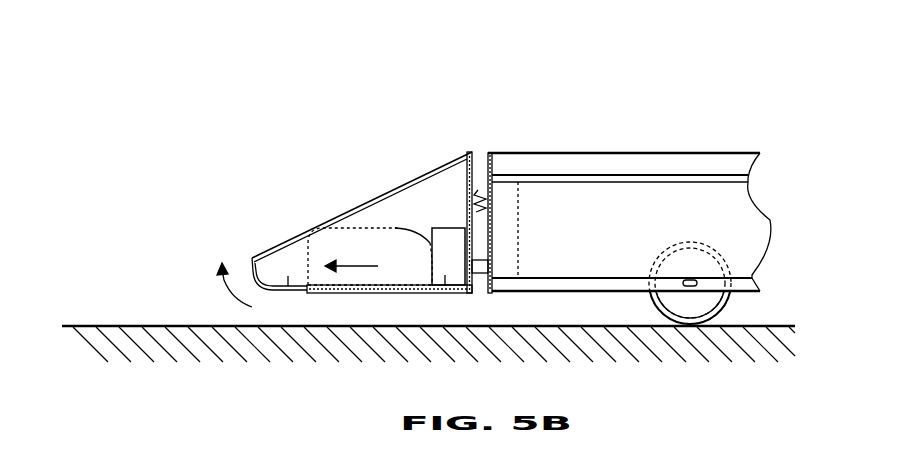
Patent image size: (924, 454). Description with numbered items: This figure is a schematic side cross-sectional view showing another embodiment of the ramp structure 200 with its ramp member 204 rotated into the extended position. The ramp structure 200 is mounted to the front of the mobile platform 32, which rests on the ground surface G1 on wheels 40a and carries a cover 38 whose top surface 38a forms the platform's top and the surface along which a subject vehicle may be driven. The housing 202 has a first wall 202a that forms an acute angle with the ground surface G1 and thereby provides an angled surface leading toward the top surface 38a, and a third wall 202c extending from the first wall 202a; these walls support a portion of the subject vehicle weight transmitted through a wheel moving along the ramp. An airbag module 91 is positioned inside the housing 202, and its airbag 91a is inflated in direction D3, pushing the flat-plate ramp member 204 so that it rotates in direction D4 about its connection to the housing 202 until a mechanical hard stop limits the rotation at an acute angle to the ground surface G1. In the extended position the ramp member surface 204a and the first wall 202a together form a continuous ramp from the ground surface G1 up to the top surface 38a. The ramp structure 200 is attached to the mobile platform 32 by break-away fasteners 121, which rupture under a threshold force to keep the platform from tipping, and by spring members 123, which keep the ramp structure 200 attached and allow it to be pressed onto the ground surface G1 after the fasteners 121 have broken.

The ramp structure 200 is at (337, 175).
The housing 202 is at (362, 188).
The first wall 202a is at (365, 188).
The third wall 202c is at (458, 215).
The ramp member 204 is at (240, 220).
The ramp member surface 204a is at (295, 236).
The airbag module 91 is at (446, 285).
The airbag 91a is at (288, 283).
The break-away fasteners 121 is at (492, 260).
The spring members 123 is at (478, 190).
The mobile platform 32 is at (598, 203).
The cover 38 is at (638, 183).
The top surface 38a is at (695, 155).
The wheels 40a is at (727, 308).
The ground surface G1 is at (127, 326).
The airbag inflation direction D3 is at (360, 252).
The ramp member rotation direction D4 is at (252, 307).